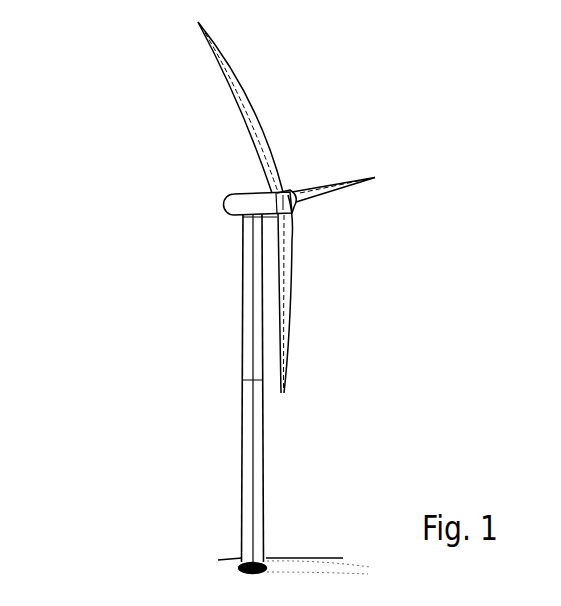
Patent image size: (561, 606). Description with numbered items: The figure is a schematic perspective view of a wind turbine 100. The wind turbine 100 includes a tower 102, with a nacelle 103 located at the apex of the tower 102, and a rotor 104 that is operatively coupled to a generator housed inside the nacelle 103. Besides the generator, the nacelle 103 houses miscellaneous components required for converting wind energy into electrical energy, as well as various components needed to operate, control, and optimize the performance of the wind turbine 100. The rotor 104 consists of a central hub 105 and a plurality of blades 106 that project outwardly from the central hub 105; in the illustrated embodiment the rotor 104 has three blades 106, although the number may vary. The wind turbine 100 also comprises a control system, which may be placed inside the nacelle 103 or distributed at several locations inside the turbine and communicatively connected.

The wind turbine 100 is at (108, 157).
The tower 102 is at (247, 327).
The nacelle 103 is at (238, 195).
The rotor 104 is at (362, 273).
The central hub 105 is at (286, 192).
The blades 106 is at (245, 111).